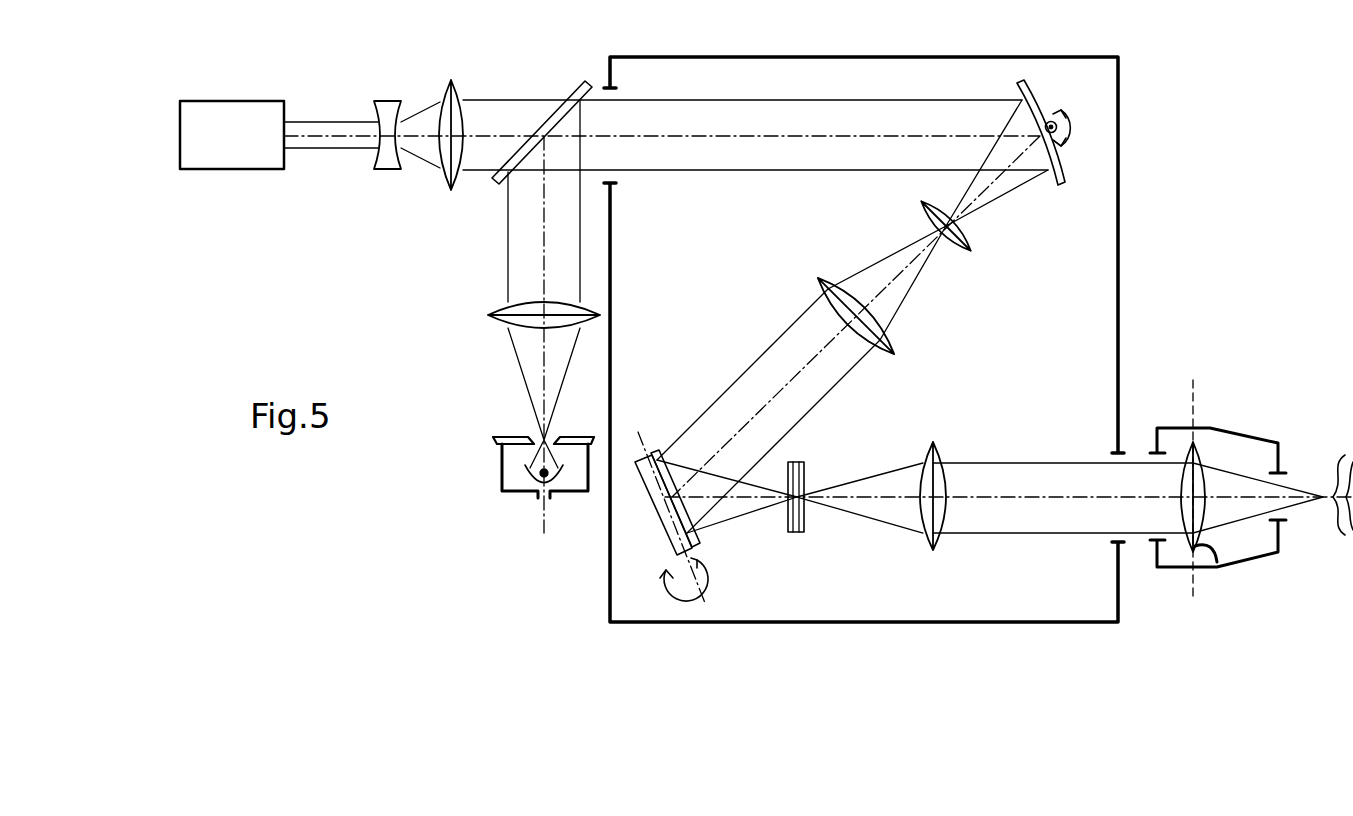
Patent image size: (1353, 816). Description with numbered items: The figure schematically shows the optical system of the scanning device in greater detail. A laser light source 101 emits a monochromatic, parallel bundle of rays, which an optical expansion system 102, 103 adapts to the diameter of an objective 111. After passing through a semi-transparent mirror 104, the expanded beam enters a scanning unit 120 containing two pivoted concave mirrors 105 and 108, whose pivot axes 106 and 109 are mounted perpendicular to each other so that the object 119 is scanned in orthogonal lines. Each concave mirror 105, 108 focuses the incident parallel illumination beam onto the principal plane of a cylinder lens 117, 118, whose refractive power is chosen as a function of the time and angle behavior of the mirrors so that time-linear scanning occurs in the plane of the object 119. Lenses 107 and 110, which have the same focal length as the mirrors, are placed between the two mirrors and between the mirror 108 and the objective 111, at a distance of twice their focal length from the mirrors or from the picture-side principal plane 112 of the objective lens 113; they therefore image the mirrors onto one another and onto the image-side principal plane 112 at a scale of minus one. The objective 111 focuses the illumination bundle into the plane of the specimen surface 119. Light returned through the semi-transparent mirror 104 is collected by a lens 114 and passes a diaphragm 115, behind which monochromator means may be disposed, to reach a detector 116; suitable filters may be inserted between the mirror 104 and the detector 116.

The laser light source 101 is at (220, 160).
The optical expansion system 102 is at (390, 160).
The optical expansion system 103 is at (452, 187).
The semi-transparent mirror 104 is at (492, 181).
The pivoted concave mirror 105 is at (1055, 186).
The pivot axis 106 is at (1052, 120).
The lens 107 is at (893, 355).
The pivoted concave mirror 108 is at (655, 450).
The pivot axis 109 is at (672, 542).
The lens 110 is at (933, 551).
The objective 111 is at (1182, 567).
The image-side principal plane 112 is at (1215, 400).
The objective lens 113 is at (1217, 568).
The focusing lens 114 is at (497, 320).
The diaphragm 115 is at (502, 443).
The detector 116 is at (530, 482).
The cylinder lens 117 is at (972, 250).
The cylinder lens 118 is at (803, 533).
The object 119 is at (1340, 455).
The scanning unit 120 is at (1122, 314).